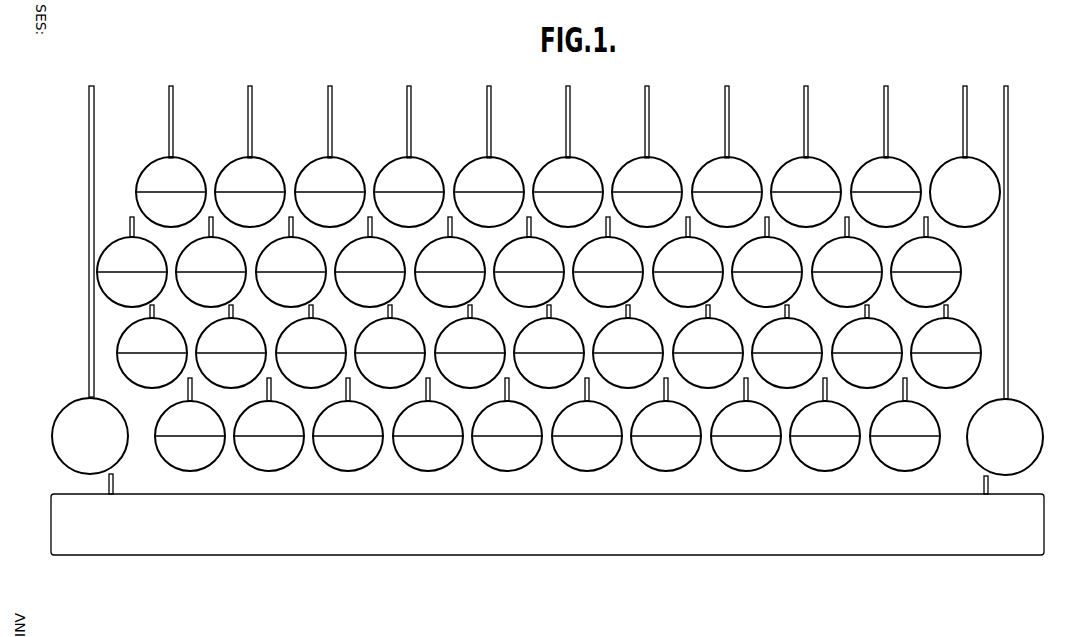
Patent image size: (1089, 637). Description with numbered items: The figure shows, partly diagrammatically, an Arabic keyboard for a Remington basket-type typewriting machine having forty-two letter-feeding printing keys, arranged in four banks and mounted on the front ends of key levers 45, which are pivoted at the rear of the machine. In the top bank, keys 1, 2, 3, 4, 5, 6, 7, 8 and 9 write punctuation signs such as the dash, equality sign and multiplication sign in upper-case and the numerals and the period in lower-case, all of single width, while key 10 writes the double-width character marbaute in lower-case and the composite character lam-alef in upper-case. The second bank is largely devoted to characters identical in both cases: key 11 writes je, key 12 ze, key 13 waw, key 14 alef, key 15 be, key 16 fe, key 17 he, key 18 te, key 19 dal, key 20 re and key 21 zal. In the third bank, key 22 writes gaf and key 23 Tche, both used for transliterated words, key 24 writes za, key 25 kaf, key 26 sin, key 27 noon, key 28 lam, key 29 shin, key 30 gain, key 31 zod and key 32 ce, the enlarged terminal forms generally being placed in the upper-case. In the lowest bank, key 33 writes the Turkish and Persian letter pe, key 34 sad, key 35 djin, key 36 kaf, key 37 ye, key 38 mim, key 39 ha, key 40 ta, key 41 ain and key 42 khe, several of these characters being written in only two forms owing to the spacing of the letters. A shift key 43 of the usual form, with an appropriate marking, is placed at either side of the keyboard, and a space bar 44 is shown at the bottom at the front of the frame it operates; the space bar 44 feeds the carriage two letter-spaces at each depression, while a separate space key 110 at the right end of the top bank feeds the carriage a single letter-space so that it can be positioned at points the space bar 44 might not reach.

The key 1 is at (902, 162).
The key 2 is at (822, 162).
The key 3 is at (743, 162).
The key 4 is at (663, 162).
The key 5 is at (584, 162).
The key 6 is at (505, 162).
The key 7 is at (425, 162).
The key 8 is at (346, 162).
The key 9 is at (266, 162).
The key 10 is at (187, 162).
The key 11 is at (947, 248).
The key 12 is at (868, 248).
The key 13 is at (788, 248).
The key 14 is at (709, 248).
The key 15 is at (629, 248).
The key 16 is at (550, 248).
The key 17 is at (471, 248).
The key 18 is at (391, 248).
The key 19 is at (312, 248).
The key 20 is at (232, 248).
The key 21 is at (153, 248).
The key 22 is at (967, 329).
The key 23 is at (888, 329).
The key 24 is at (808, 329).
The key 25 is at (729, 329).
The key 26 is at (649, 329).
The key 27 is at (570, 329).
The key 28 is at (491, 329).
The key 29 is at (411, 329).
The key 30 is at (332, 329).
The key 31 is at (252, 329).
The key 32 is at (173, 329).
The key 33 is at (926, 412).
The key 34 is at (846, 412).
The key 35 is at (767, 412).
The key 36 is at (687, 412).
The key 37 is at (608, 412).
The key 38 is at (528, 412).
The key 39 is at (449, 412).
The key 40 is at (369, 412).
The key 41 is at (290, 412).
The key 42 is at (211, 412).
The shift key 43 is at (116, 409).
The space bar 44 is at (562, 556).
The key levers 45 is at (248, 133).
The space key 110 is at (990, 168).